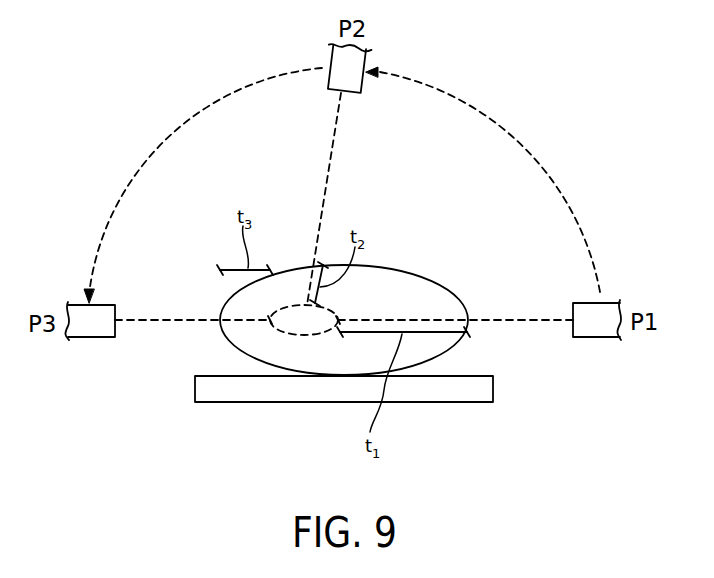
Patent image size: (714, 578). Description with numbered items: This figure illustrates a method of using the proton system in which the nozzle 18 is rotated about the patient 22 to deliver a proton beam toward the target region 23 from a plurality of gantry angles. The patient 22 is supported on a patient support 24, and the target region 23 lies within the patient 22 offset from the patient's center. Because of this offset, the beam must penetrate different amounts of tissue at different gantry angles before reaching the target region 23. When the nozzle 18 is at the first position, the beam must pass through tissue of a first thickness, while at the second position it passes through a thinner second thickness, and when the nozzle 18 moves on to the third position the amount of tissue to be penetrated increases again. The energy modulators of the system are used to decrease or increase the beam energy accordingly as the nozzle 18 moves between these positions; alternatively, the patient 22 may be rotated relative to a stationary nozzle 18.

The nozzle 18 is at (328, 79).
The patient 22 is at (450, 348).
The target region 23 is at (297, 337).
The patient support 24 is at (475, 402).